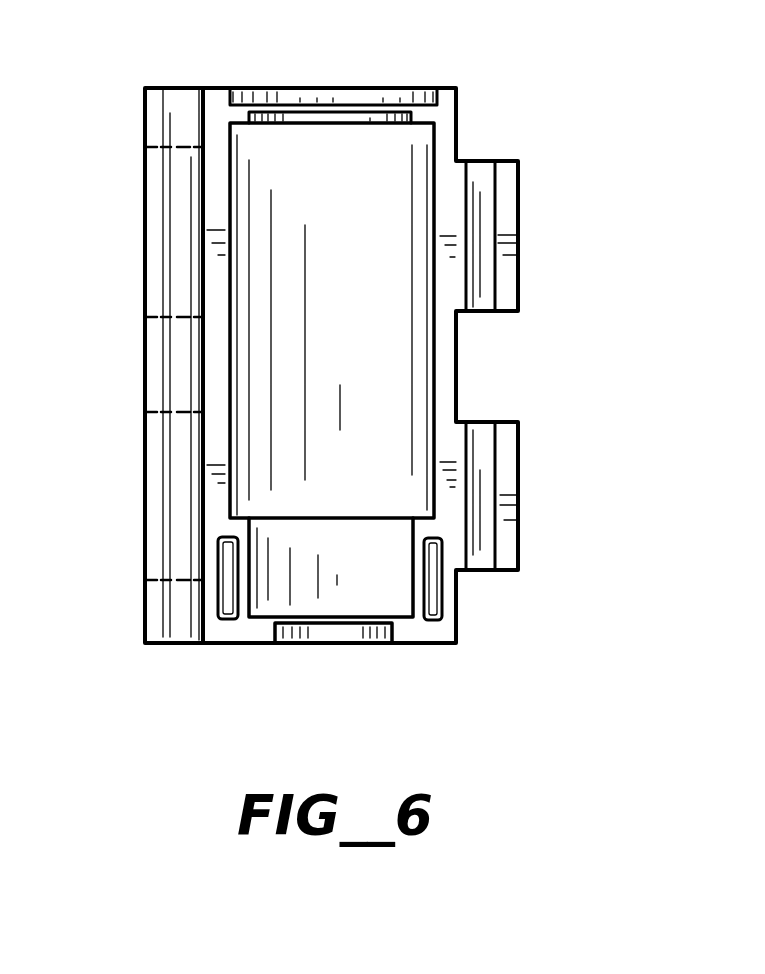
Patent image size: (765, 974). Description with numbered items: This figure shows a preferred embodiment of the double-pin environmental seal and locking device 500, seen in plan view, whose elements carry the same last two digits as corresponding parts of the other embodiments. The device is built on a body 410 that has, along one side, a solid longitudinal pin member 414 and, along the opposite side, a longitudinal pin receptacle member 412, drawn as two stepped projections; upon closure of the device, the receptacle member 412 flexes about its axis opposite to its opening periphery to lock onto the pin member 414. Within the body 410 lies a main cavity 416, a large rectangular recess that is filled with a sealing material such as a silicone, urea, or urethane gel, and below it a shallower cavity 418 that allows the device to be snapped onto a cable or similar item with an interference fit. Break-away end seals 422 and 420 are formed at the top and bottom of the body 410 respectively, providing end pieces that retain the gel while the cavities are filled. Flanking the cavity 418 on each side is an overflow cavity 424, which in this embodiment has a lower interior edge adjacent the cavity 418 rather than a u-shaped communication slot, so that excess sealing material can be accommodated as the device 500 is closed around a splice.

The body 410 is at (441, 393).
The receptacle member 412 is at (482, 232).
The pin member 414 is at (180, 198).
The main cavity 416 is at (288, 205).
The cavity 418 is at (293, 563).
The break-away end seal 420 is at (357, 623).
The break-away end seal 422 is at (362, 105).
The overflow cavity 424 is at (220, 592).
The environmental seal and locking device 500 is at (108, 400).